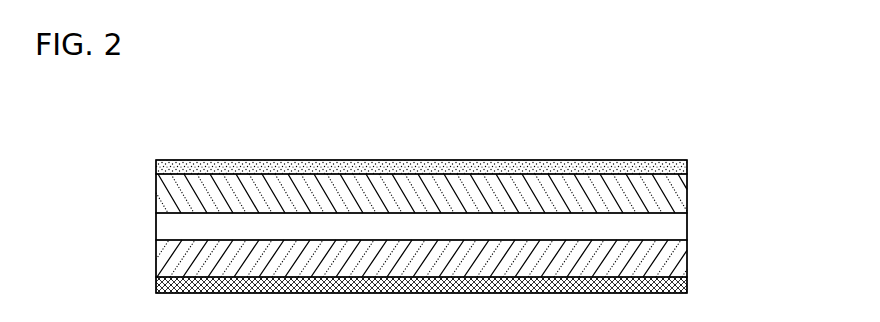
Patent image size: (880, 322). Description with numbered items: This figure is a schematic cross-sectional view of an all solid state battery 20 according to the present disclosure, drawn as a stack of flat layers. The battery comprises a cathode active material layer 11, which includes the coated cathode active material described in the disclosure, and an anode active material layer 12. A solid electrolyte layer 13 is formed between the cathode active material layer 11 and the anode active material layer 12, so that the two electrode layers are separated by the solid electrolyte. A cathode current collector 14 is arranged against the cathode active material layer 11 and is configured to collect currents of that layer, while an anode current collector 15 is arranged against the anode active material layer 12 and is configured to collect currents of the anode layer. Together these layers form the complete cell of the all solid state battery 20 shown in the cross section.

The all solid state battery 20 is at (695, 102).
The anode current collector 15 is at (687, 164).
The anode active material layer 12 is at (687, 203).
The solid electrolyte layer 13 is at (687, 232).
The cathode active material layer 11 is at (687, 264).
The cathode current collector 14 is at (687, 286).